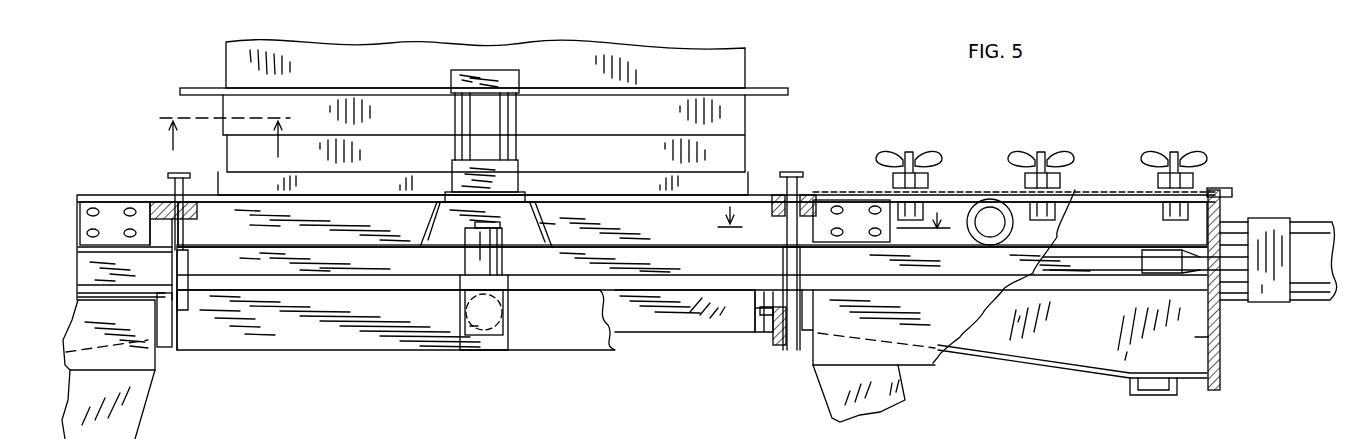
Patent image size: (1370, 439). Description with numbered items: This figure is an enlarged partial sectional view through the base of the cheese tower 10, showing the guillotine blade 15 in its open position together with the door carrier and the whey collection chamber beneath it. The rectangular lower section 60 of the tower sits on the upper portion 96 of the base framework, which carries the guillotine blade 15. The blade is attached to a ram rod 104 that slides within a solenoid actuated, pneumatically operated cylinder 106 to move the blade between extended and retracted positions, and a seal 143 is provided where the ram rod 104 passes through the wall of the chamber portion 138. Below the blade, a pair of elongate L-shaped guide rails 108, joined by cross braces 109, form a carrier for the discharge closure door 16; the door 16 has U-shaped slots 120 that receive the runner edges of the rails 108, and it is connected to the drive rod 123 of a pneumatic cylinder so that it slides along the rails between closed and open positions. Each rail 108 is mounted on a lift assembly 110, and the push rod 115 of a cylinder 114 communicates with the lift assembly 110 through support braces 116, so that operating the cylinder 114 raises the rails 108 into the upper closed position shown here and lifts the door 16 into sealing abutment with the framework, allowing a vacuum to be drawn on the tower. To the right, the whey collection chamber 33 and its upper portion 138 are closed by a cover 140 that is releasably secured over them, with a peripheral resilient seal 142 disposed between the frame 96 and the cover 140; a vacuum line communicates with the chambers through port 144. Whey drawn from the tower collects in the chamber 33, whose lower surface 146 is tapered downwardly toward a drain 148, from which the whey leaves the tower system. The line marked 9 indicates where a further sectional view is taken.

The lower section of the tower 60 is at (742, 65).
The cylinder 114 is at (507, 123).
The push rod 115 is at (505, 240).
The support braces 116 is at (675, 252).
The lift assembly 110 is at (167, 182).
The upper portion of the framework 96 is at (748, 208).
The peripheral resilient seal 142 is at (803, 197).
The port 144 is at (988, 200).
The cover 140 is at (1100, 190).
The upper portion of the whey collection chamber 138 is at (1122, 205).
The seal 143 is at (1233, 250).
The ram rod 104 is at (1178, 257).
The guillotine blade 15 is at (1083, 262).
The whey collection chamber 33 is at (160, 327).
The solenoid actuated cylinder 106 is at (1313, 268).
The lower surface of the whey collection chamber 146 is at (1037, 357).
The drain 148 is at (1153, 393).
The cross braces 109 is at (400, 350).
The drive rod 123 is at (503, 323).
The discharge closure door 16 is at (662, 323).
The U-shaped slot 120 is at (758, 312).
The guide rails 108 is at (777, 337).
The section line 9 is at (225, 128).
The tower 10 is at (834, 229).